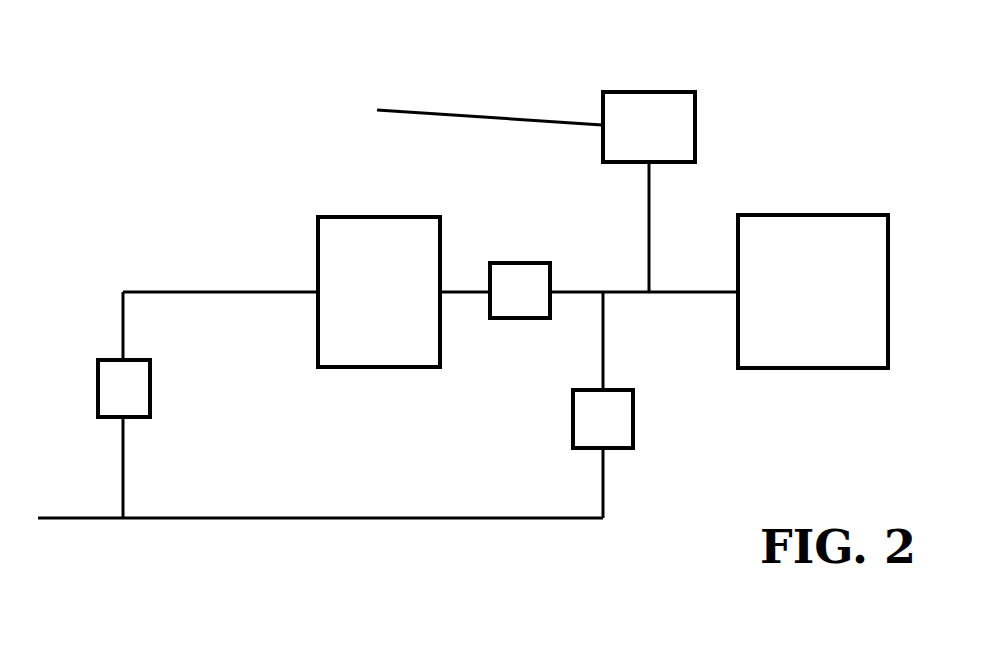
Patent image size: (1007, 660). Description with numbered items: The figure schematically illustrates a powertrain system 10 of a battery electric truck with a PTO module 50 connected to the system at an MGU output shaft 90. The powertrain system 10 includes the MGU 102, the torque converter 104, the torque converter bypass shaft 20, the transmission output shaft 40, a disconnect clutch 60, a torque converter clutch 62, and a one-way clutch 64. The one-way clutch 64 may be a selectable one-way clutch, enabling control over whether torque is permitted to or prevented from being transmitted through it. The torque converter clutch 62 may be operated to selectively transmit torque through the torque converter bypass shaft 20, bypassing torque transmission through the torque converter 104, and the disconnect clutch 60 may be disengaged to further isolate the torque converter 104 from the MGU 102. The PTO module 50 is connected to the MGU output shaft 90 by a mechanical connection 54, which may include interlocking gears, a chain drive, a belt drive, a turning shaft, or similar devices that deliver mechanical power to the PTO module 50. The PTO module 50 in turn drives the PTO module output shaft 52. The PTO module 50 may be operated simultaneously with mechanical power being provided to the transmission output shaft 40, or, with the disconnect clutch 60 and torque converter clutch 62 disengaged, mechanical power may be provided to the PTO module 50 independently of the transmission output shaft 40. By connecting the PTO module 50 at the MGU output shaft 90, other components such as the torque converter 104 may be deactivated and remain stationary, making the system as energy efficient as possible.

The powertrain system 10 is at (832, 72).
The torque converter bypass shaft 20 is at (380, 522).
The transmission output shaft 40 is at (87, 520).
The PTO module 50 is at (643, 92).
The PTO module output shaft 52 is at (477, 113).
The mechanical connection 54 is at (652, 213).
The disconnect clutch 60 is at (527, 263).
The torque converter clutch 62 is at (633, 428).
The one-way clutch 64 is at (98, 392).
The MGU output shaft 90 is at (703, 295).
The MGU 102 is at (817, 370).
The torque converter 104 is at (317, 250).